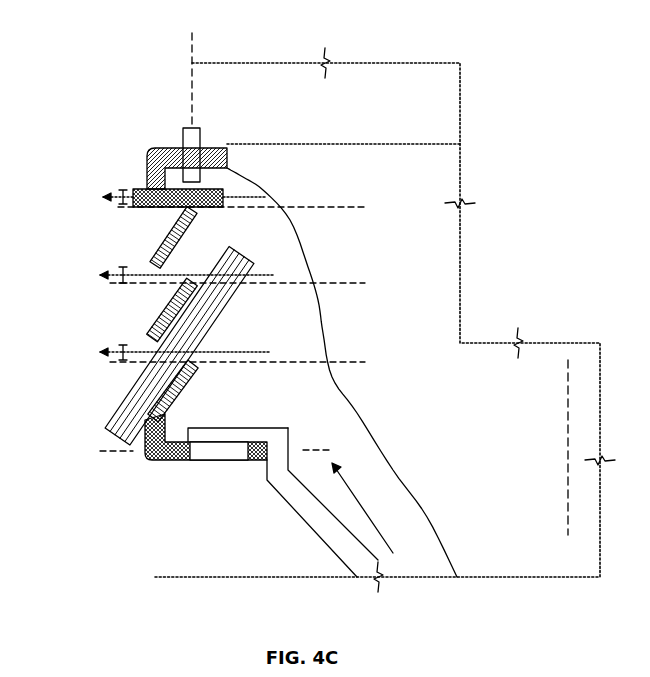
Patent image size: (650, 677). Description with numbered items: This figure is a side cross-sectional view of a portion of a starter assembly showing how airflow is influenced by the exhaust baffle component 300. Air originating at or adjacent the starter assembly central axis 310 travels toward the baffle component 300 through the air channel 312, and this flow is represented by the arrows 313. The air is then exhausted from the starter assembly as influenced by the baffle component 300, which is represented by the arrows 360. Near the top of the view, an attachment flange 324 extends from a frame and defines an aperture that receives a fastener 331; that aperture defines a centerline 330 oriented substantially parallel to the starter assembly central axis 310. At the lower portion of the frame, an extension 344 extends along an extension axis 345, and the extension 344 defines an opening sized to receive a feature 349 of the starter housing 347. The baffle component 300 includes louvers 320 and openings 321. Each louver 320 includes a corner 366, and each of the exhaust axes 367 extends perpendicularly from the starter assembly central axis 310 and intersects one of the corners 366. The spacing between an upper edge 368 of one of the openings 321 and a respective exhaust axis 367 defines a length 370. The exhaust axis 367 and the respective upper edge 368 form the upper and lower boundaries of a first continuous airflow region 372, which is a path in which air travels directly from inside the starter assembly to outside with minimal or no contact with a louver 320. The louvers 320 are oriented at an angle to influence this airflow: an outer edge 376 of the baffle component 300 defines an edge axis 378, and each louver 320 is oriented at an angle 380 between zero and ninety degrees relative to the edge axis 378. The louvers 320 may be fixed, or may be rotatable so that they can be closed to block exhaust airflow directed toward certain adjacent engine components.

The baffle component 300 is at (86, 90).
The starter assembly central axis 310 is at (567, 473).
The air channel 312 is at (359, 408).
The arrows 313 is at (363, 505).
The louvers 320 is at (165, 257).
The openings 321 is at (160, 238).
The attachment flange 324 is at (167, 147).
The centerline 330 is at (193, 48).
The fastener 331 is at (197, 136).
The extension 344 is at (168, 463).
The extension axis 345 is at (137, 457).
The starter housing 347 is at (400, 143).
The feature 349 is at (257, 428).
The arrows 360 is at (265, 195).
The corner 366 is at (207, 207).
The exhaust axes 367 is at (325, 207).
The upper edge 368 is at (147, 160).
The length 370 is at (110, 193).
The first continuous airflow region 372 is at (223, 195).
The outer edge 376 is at (150, 258).
The edge axis 378 is at (147, 223).
The angle 380 is at (183, 235).